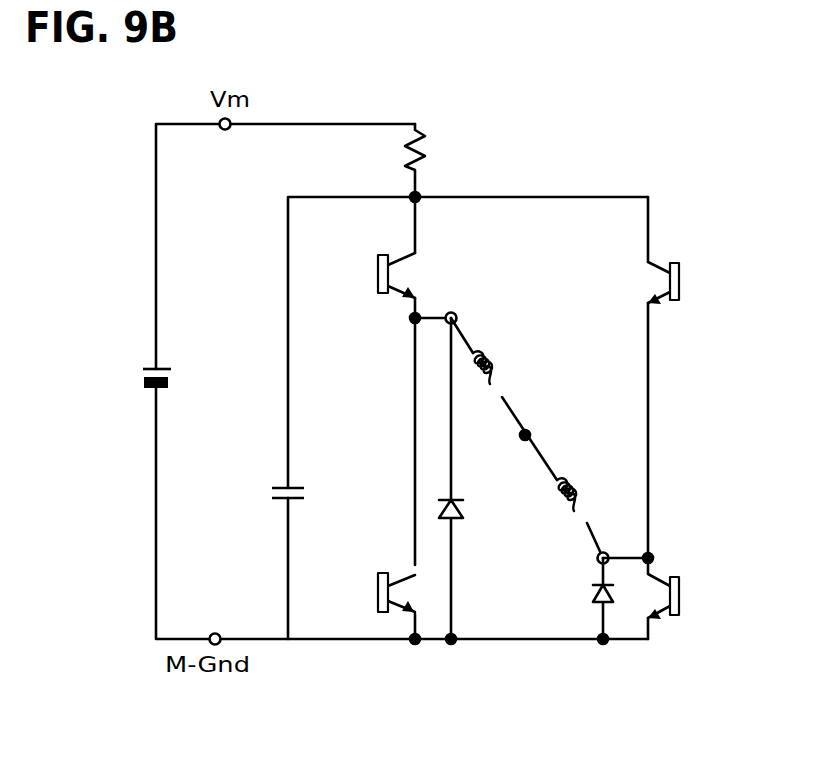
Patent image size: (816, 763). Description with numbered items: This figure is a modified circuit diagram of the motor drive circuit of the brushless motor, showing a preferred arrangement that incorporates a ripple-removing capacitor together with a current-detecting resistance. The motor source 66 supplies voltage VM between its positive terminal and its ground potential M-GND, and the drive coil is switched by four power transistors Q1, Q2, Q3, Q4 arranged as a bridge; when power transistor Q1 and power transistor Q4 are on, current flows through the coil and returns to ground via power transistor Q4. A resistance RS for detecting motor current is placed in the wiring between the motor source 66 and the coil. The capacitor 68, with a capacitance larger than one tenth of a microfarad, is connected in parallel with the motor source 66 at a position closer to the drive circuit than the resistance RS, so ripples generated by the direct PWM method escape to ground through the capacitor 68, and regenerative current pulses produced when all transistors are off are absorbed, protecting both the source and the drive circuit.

The motor source 66 is at (150, 389).
The capacitor 68 is at (280, 487).
The power transistor Q1 is at (378, 276).
The power transistor Q2 is at (707, 282).
The power transistor Q3 is at (378, 593).
The power transistor Q4 is at (705, 597).